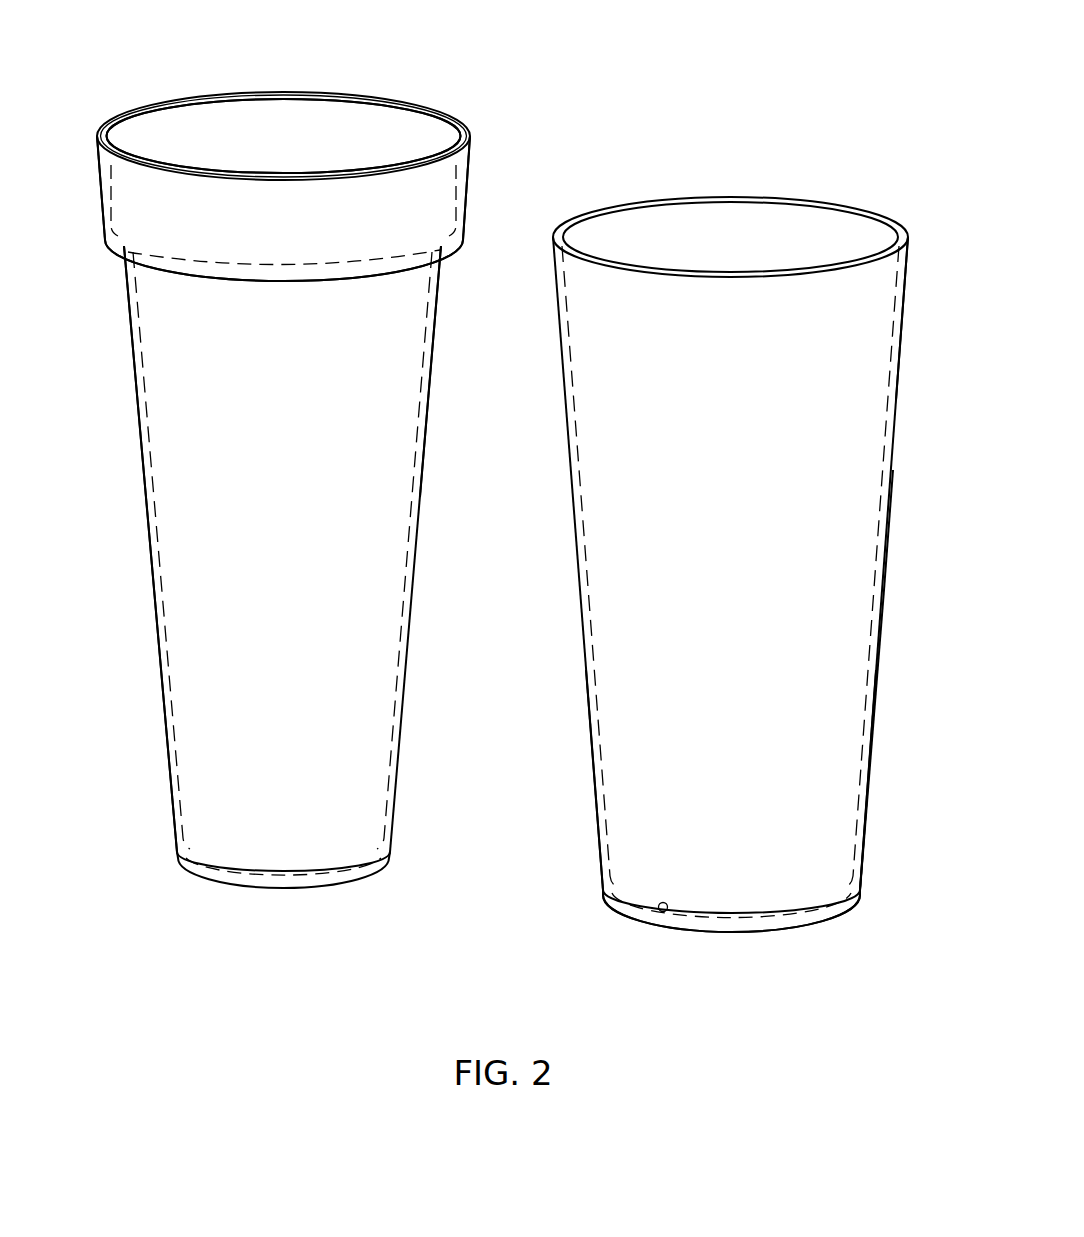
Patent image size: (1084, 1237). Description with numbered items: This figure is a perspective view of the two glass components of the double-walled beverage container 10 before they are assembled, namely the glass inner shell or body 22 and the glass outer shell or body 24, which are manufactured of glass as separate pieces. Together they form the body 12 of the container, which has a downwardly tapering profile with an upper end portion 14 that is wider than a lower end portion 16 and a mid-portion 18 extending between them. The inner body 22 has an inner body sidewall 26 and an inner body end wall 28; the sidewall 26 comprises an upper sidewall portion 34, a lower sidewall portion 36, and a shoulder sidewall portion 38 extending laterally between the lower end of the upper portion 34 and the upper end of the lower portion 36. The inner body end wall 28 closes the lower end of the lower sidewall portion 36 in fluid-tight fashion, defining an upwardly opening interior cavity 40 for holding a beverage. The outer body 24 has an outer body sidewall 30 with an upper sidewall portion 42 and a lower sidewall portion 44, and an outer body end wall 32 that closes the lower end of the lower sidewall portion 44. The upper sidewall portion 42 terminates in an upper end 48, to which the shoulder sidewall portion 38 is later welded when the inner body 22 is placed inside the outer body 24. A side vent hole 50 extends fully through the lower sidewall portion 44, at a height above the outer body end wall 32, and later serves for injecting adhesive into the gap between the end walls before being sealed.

The glass double-walled beverage container 10 is at (849, 29).
The body 12 is at (513, 94).
The upper end portion 14 is at (469, 180).
The lower end portion 16 is at (862, 872).
The mid-portion 18 is at (426, 500).
The glass inner shell or body 22 is at (433, 397).
The glass outer shell or body 24 is at (883, 612).
The inner body sidewall 26 is at (158, 682).
The inner body end wall 28 is at (243, 888).
The outer body sidewall 30 is at (597, 820).
The outer body end wall 32 is at (793, 928).
The upper sidewall portion 34 is at (99, 190).
The lower sidewall portion 36 is at (145, 523).
The shoulder sidewall portion 38 is at (107, 237).
The interior cavity 40 is at (271, 146).
The upper sidewall portion 42 is at (907, 286).
The lower sidewall portion 44 is at (868, 822).
The upper end 48 is at (900, 230).
The side vent hole 50 is at (658, 911).